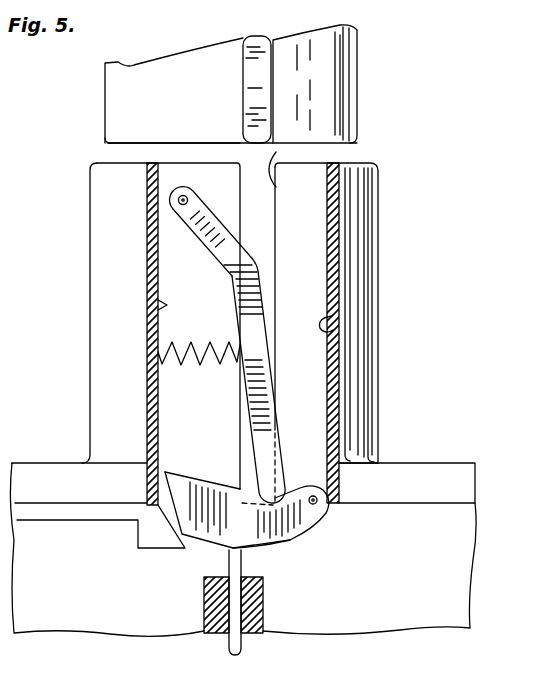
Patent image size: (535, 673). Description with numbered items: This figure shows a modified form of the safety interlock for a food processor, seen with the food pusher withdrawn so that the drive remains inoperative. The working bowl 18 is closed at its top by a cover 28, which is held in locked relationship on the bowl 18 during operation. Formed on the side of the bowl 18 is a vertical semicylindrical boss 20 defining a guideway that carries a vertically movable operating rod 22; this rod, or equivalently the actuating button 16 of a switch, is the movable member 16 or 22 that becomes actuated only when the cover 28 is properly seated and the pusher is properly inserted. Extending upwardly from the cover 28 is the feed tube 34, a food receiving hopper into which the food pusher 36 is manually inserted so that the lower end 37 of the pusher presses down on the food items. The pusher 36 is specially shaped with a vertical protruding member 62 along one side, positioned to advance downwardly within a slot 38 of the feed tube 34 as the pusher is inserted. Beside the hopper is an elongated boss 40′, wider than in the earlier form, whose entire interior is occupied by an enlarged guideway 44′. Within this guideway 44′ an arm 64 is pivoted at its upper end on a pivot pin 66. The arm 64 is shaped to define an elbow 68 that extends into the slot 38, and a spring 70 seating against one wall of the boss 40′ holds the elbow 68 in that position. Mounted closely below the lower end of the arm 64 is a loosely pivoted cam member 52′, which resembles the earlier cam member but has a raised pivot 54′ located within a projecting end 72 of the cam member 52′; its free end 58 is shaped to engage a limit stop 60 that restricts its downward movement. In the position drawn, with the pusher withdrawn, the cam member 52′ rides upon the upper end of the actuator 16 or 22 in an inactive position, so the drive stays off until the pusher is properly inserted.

The food pusher 36 is at (342, 63).
The protruding member 62 is at (250, 84).
The lower end of the pusher 37 is at (128, 143).
The slot 38 is at (280, 152).
The feed tube 34 is at (380, 254).
The elongated boss 40′ is at (340, 369).
The guideway 44′ is at (157, 303).
The pivot pin 66 is at (173, 194).
The elbow 68 is at (258, 272).
The arm 64 is at (277, 414).
The spring 70 is at (203, 340).
The free end 58 is at (170, 483).
The projecting end 72 is at (306, 490).
The pivoted cam member 52′ is at (292, 540).
The raised pivot 54′ is at (337, 499).
The cover 28 is at (440, 460).
The limit stop 60 is at (156, 540).
The bowl 18 is at (472, 582).
The semicylindrical boss 20 is at (264, 598).
The actuating button 16 is at (170, 605).
The operating rod 22 is at (220, 607).